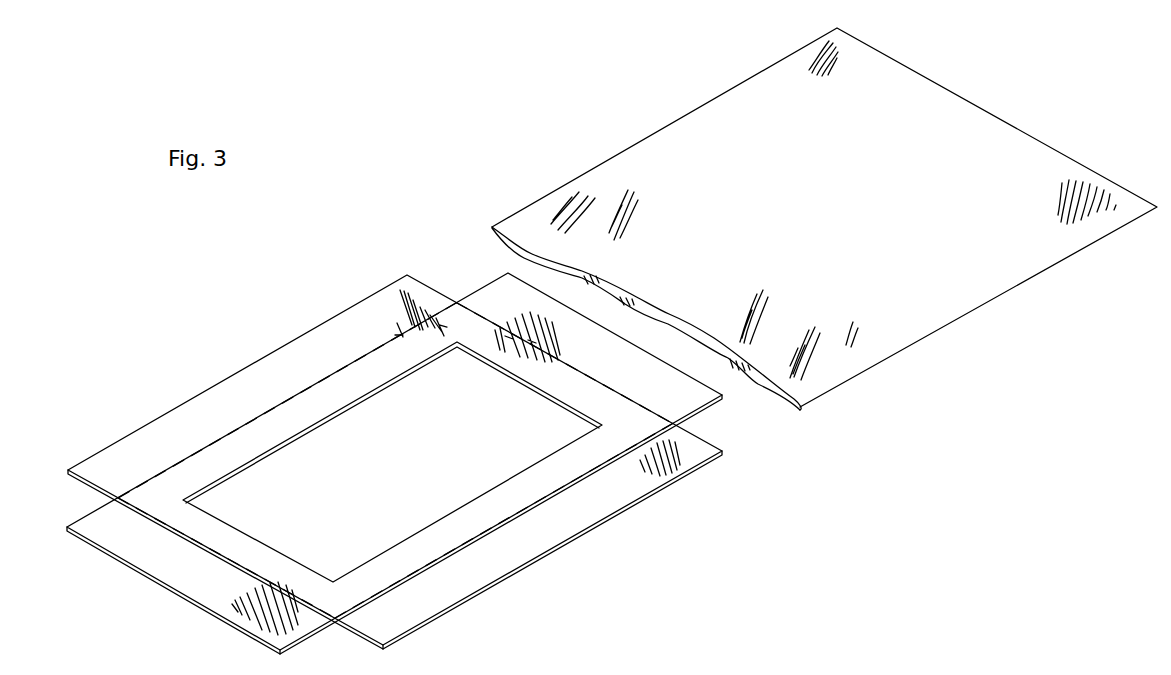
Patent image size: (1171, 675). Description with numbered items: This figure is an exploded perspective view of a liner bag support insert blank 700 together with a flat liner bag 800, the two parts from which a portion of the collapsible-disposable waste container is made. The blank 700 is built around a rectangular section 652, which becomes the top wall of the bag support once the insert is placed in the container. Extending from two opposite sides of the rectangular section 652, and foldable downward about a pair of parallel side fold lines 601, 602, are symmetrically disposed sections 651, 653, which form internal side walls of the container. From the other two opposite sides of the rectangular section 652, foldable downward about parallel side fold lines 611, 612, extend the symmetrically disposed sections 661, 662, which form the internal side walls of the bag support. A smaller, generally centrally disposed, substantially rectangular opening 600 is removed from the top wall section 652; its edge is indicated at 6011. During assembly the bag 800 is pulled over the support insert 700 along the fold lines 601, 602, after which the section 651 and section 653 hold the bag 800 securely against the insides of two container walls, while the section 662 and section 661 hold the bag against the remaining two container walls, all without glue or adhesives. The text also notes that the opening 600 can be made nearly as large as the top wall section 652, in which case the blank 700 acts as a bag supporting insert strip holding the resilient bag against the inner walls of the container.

The liner bag support insert blank 700 is at (600, 534).
The opening 600 is at (304, 511).
The edge of opening 6011 is at (313, 425).
The side fold line 601 is at (276, 402).
The side fold line 611 is at (229, 563).
The side fold line 612 is at (592, 382).
The side fold line 602 is at (590, 474).
The rectangular section 652 is at (471, 523).
The section 651 is at (148, 471).
The section 661 is at (142, 547).
The section 662 is at (525, 313).
The section 653 is at (475, 579).
The flat liner bag 800 is at (1023, 289).